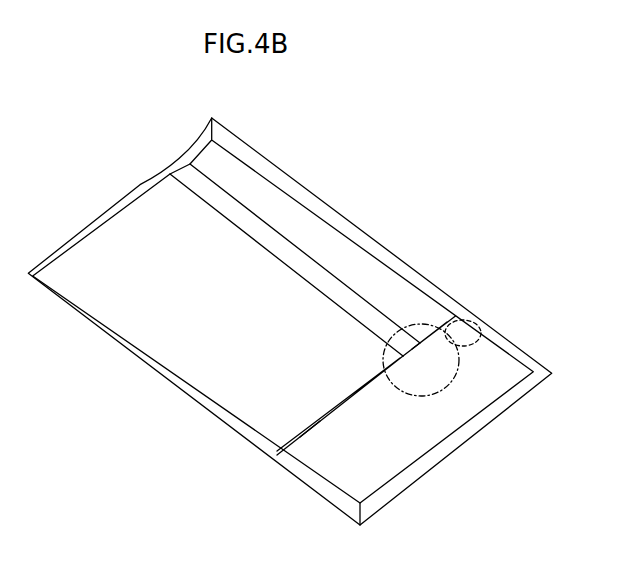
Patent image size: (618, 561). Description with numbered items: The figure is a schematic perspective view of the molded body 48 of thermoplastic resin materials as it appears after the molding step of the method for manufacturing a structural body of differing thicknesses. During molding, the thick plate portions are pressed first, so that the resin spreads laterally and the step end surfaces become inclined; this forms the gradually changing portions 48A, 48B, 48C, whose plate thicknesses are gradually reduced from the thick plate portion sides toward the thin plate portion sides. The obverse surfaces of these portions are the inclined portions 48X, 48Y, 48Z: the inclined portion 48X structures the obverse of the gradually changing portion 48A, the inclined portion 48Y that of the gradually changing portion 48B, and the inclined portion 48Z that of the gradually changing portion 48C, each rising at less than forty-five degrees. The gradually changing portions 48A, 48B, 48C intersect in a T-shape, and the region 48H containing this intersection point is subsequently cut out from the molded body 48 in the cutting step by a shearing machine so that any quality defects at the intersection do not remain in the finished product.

The molded body 48 is at (121, 176).
The inclined portion 48Z is at (272, 245).
The gradually changing portion 48C is at (316, 274).
The gradually changing portion 48A is at (348, 396).
The gradually changing portion 48B is at (447, 320).
The region 48H is at (407, 378).
The inclined portion 48Y is at (488, 331).
The inclined portion 48X is at (317, 427).